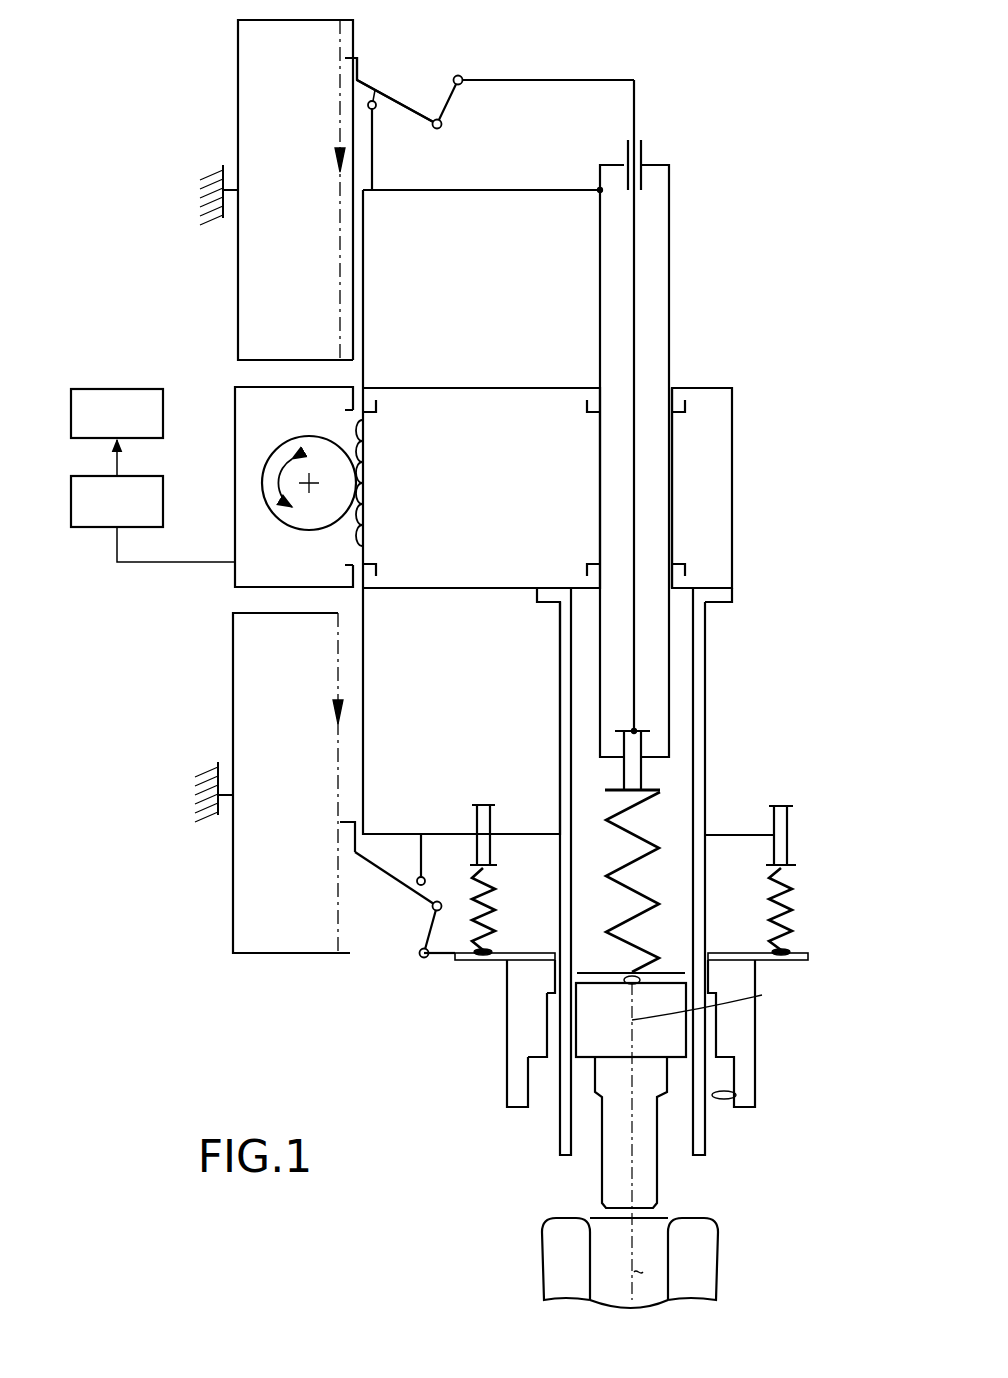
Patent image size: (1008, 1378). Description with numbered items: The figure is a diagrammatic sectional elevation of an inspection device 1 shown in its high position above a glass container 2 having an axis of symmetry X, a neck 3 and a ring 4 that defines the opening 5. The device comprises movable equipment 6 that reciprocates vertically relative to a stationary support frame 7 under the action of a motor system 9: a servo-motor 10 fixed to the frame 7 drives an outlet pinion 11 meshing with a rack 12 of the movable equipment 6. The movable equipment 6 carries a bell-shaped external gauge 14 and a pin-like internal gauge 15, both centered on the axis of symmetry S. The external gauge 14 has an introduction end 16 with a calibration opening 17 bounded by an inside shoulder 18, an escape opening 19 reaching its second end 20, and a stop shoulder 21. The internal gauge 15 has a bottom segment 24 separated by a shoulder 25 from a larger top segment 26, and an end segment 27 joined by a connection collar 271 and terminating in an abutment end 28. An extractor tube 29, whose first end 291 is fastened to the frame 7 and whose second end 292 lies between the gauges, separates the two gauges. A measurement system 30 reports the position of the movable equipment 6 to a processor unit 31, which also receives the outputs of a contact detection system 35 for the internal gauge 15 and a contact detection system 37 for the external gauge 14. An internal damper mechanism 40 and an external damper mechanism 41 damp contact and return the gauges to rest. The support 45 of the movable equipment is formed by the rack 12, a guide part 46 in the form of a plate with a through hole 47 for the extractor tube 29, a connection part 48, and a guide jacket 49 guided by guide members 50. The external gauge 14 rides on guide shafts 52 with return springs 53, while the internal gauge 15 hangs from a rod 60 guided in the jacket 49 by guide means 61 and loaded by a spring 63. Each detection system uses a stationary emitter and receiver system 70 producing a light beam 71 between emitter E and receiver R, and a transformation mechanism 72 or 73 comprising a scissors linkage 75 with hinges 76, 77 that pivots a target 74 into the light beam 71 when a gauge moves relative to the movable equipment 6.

The inspection device 1 is at (756, 355).
The container 2 is at (714, 1291).
The neck 3 is at (568, 1285).
The ring 4 is at (700, 1228).
The opening 5 is at (590, 1262).
The movable equipment 6 is at (378, 1036).
The support frame 7 is at (222, 220).
The motor system 9 is at (480, 384).
The servo-motor 10 is at (236, 590).
The outlet pinion 11 is at (302, 440).
The rack 12 is at (366, 455).
The external gauge 14 is at (503, 1056).
The internal gauge 15 is at (703, 1135).
The introduction end 16 is at (508, 1110).
The calibration opening 17 is at (736, 1095).
The inside shoulder 18 is at (736, 1070).
The escape opening 19 is at (555, 1015).
The second end 20 is at (522, 963).
The stop shoulder 21 is at (542, 990).
The bottom segment 24 is at (560, 1124).
The shoulder 25 is at (673, 1060).
The top segment 26 is at (576, 1050).
The end segment 27 is at (658, 1170).
The connection collar 271 is at (601, 1120).
The abutment end 28 is at (634, 1216).
The extractor tube 29 is at (707, 677).
The first end of extractor tube 291 is at (734, 596).
The second end of extractor tube 292 is at (561, 1155).
The measurement system 30 is at (117, 483).
The processor unit 31 is at (117, 413).
The contact detection system 35 is at (545, 46).
The contact detection system 37 is at (480, 670).
The internal damper mechanism 40 is at (662, 835).
The external damper mechanism 41 is at (500, 884).
The support 45 is at (366, 672).
The guide part 46 is at (450, 835).
The through hole 47 is at (555, 832).
The connection part 48 is at (506, 188).
The guide jacket 49 is at (672, 318).
The guide members 50 is at (678, 414).
The guide shaft 52 is at (785, 905).
The return spring 53 is at (792, 880).
The rod 60 is at (672, 222).
The guide means 61 is at (648, 160).
The spring 63 is at (661, 790).
The emitter and receiver system 70 is at (236, 90).
The light beam 71 is at (340, 190).
The transformation mechanism 72 is at (494, 68).
The transformation mechanism 73 is at (412, 920).
The target 74 is at (358, 62).
The scissors linkage 75 is at (406, 102).
The hinge 76 is at (460, 76).
The hinge 77 is at (378, 108).
The axis of symmetry S is at (707, 1000).
The axis of symmetry X is at (647, 1273).